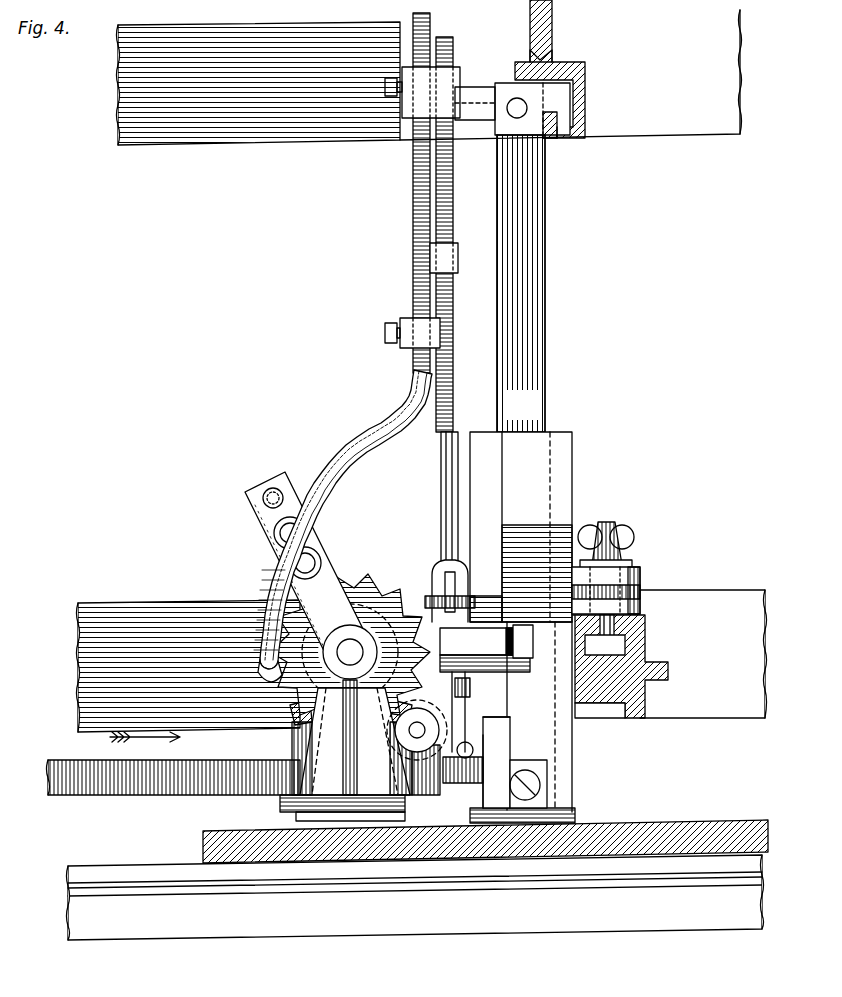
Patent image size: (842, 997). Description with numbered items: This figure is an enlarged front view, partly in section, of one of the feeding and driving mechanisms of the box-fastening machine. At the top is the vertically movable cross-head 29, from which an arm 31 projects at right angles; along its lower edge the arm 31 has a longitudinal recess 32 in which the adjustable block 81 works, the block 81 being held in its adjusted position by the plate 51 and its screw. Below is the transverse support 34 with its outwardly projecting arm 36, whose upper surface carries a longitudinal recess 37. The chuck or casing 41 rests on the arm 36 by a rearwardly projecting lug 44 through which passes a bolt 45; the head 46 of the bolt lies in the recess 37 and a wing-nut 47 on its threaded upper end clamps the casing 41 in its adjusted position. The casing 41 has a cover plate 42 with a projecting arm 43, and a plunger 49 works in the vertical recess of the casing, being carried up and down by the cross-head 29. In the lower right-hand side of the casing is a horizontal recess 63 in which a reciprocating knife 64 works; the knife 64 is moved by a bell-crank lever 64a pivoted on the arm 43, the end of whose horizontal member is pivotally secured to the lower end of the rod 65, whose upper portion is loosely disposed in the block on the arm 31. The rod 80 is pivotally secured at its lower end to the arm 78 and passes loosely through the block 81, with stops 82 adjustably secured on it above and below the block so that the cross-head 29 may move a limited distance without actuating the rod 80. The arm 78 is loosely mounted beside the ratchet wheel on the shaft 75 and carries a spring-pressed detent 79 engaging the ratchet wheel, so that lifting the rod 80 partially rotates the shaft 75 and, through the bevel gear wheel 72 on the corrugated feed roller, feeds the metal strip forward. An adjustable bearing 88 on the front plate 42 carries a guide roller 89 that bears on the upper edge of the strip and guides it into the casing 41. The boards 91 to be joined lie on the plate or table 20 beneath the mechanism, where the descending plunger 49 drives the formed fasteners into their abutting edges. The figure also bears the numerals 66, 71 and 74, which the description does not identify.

The plate or table 20 is at (108, 876).
The cross-head 29 is at (429, 77).
The arm 31 is at (552, 22).
The longitudinal recess 32 is at (560, 136).
The transverse support 34 is at (134, 605).
The arm 36 is at (645, 695).
The longitudinal recess 37 is at (645, 647).
The chuck or casing 41 is at (522, 722).
The cover plate 42 is at (470, 487).
The projecting arm 43 is at (486, 648).
The lug 44 is at (640, 570).
The bolt 45 is at (645, 618).
The bolt head 46 is at (605, 645).
The wing-nut 47 is at (612, 525).
The plunger 49 is at (521, 283).
The longitudinal plate 51 is at (548, 138).
The horizontal recess 63 is at (510, 720).
The reciprocating knife 64 is at (497, 735).
The bell-crank lever 64a is at (456, 687).
The rod 65 is at (442, 448).
The base plate 66 is at (405, 803).
The ratchet wheel 71 is at (362, 585).
The bevel gear wheel 72 is at (292, 712).
The standard 74 is at (366, 737).
The shaft 75 is at (350, 652).
The arm 78 is at (262, 485).
The spring pressed detent 79 is at (262, 655).
The rod 80 is at (346, 519).
The adjustable block 81 is at (505, 130).
The stops 82 is at (415, 78).
The adjustable bearing 88 is at (470, 690).
The guide roller 89 is at (428, 700).
The boards 91 is at (218, 825).